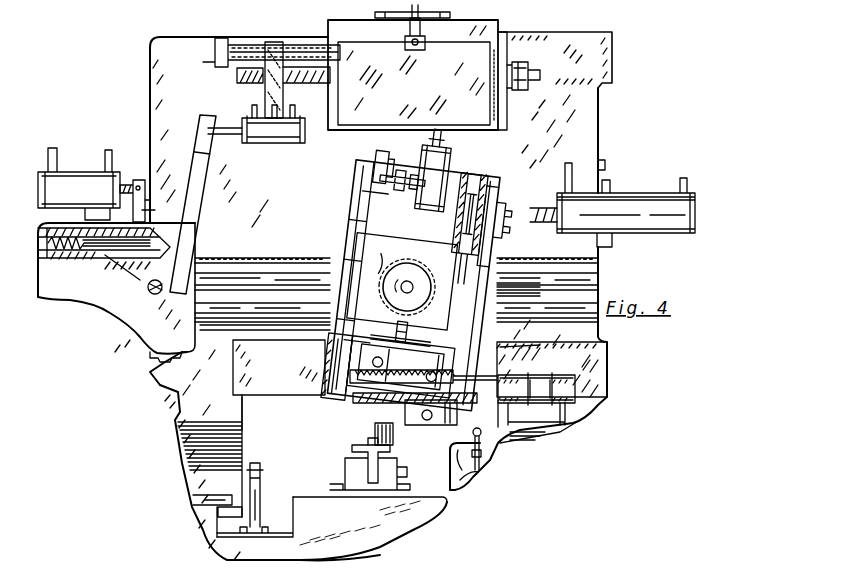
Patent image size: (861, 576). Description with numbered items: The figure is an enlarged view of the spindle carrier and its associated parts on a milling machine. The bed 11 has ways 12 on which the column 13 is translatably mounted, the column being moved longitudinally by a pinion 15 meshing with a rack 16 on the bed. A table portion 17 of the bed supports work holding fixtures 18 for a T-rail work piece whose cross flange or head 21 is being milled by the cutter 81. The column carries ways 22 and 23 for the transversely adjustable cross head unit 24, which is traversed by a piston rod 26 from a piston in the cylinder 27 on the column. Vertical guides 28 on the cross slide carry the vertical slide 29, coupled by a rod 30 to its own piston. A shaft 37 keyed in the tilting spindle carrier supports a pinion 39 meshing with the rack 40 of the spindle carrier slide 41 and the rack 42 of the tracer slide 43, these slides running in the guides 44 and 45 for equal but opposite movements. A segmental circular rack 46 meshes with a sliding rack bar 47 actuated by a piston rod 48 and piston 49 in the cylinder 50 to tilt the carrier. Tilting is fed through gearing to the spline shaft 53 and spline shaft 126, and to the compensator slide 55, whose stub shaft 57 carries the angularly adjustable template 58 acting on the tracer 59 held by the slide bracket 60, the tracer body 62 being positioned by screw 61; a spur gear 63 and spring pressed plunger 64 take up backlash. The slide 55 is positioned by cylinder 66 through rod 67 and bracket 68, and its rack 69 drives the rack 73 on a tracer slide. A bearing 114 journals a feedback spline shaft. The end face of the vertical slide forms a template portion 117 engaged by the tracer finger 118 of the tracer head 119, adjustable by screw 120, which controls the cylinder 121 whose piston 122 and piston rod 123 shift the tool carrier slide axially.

The bed 11 is at (388, 538).
The ways 12 is at (200, 499).
The column 13 is at (590, 158).
The pinion 15 is at (255, 463).
The rack 16 is at (260, 484).
The table portion 17 is at (312, 505).
The work holding clamps or fixtures 18 is at (344, 474).
The cross flange or head 21 is at (367, 445).
The ways 22 is at (606, 36).
The ways 23 is at (606, 352).
The carriage or cross head unit 24 is at (333, 184).
The piston rod 26 is at (555, 216).
The cylinder 27 is at (637, 200).
The vertical guides or ways 28 is at (468, 50).
The vertical slide 29 is at (486, 46).
The rod 30 is at (405, 44).
The shaft 37 is at (404, 295).
The pinion 39 is at (400, 322).
The rack 40 is at (428, 272).
The spindle carrier slide 41 is at (440, 427).
The rack 42 is at (375, 274).
The tracer slide 43 is at (372, 226).
The ways or guides 44 is at (333, 396).
The ways or guides 45 is at (468, 411).
The segmental circular rack 46 is at (315, 349).
The sliding rack bar 47 is at (345, 414).
The piston rod 48 is at (524, 404).
The piston 49 is at (540, 380).
The cylinder 50 is at (578, 421).
The spline shaft 53 is at (258, 263).
The compensator slide 55 is at (75, 298).
The spindle or stub shaft 57 is at (150, 292).
The angularly adjustable template 58 is at (199, 188).
The tracer 59 is at (228, 140).
The slide bracket 60 is at (266, 94).
The screw 61 is at (240, 45).
The tracer body 62 is at (278, 140).
The spur gear 63 is at (140, 270).
The spring pressed backlash take-up plunger 64 is at (95, 250).
The cylinder 66 is at (96, 172).
The rod 67 is at (130, 180).
The bracket 68 is at (150, 210).
The rack 69 is at (162, 362).
The rack 73 is at (160, 392).
The cutter 81 is at (394, 443).
The bearing 114 is at (520, 90).
The template portion 117 is at (358, 142).
The tracer finger 118 is at (455, 137).
The tracer head 119 is at (418, 147).
The adjusting screw 120 is at (392, 162).
The cylinder 121 is at (492, 190).
The piston 122 is at (445, 222).
The piston rod 123 is at (480, 260).
The spline shaft 126 is at (542, 290).